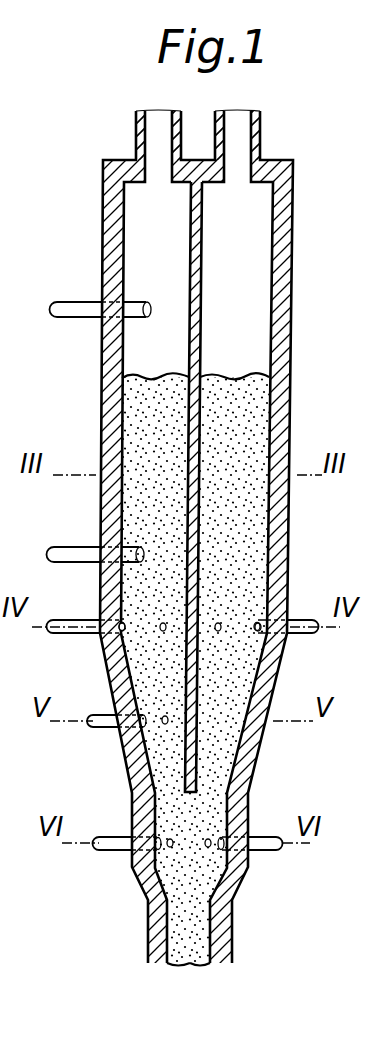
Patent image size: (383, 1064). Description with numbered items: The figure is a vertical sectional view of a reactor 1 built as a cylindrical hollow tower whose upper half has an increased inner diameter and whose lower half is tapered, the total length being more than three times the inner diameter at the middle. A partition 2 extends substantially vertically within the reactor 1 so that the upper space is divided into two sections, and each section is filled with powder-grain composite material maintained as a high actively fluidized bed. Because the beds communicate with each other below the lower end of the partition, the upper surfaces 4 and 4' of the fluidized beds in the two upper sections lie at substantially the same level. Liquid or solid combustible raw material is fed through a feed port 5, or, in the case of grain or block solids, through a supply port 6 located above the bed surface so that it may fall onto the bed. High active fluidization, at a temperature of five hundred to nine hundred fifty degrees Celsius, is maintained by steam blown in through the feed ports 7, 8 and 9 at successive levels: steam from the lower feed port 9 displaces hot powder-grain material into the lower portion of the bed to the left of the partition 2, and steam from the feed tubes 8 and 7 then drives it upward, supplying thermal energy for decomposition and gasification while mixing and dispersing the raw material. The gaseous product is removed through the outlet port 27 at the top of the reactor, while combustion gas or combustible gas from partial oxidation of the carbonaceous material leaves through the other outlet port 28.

The reactor 1 is at (103, 205).
The partition 2 is at (191, 246).
The upper surface of fluidized bed 4 is at (154, 650).
The upper surface of fluidized bed 4' is at (229, 648).
The feed port 5 is at (77, 548).
The supply port 6 is at (78, 303).
The feed port 7 is at (78, 620).
The feed tube 8 is at (100, 715).
The feed port 9 is at (112, 838).
The outlet port 27 is at (136, 135).
The outlet port 28 is at (260, 140).